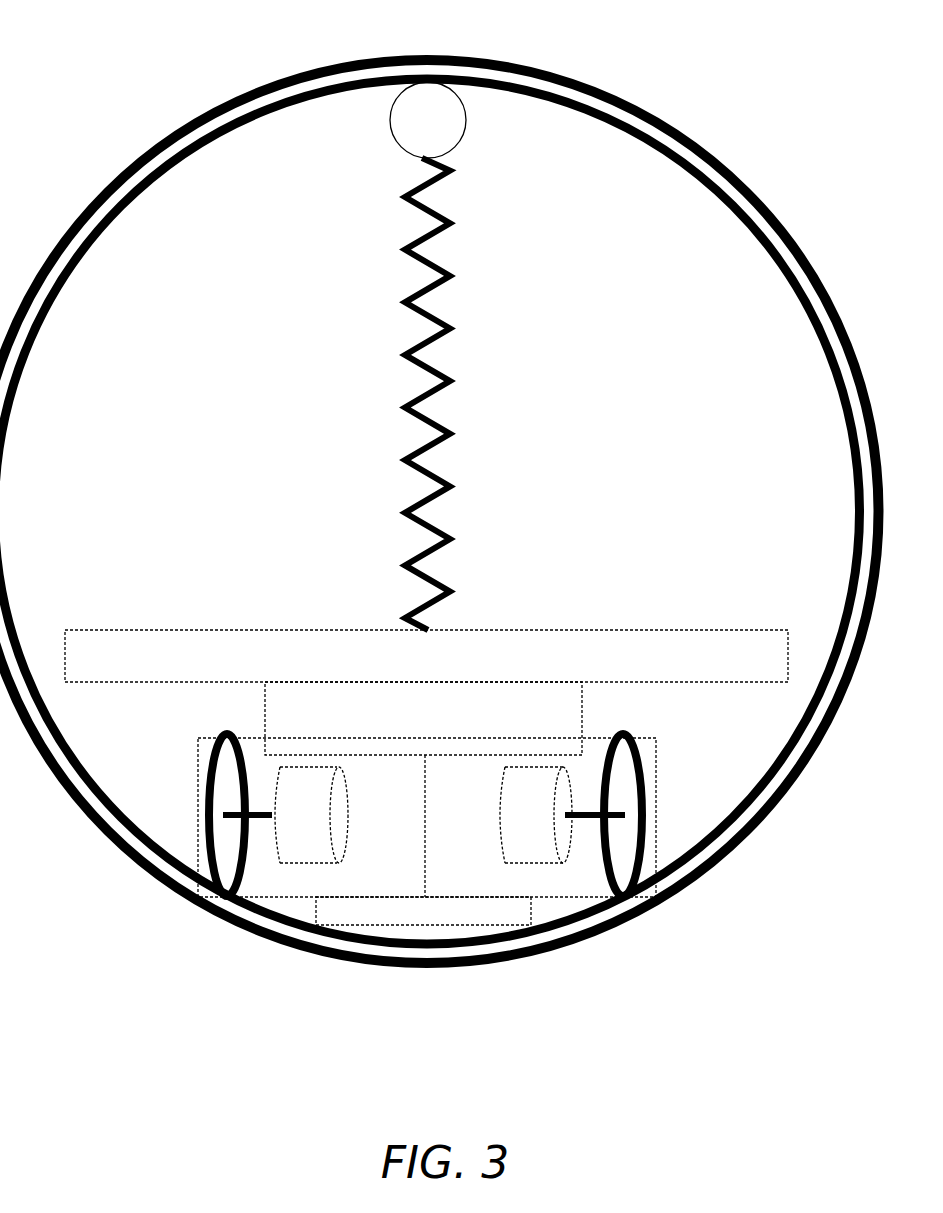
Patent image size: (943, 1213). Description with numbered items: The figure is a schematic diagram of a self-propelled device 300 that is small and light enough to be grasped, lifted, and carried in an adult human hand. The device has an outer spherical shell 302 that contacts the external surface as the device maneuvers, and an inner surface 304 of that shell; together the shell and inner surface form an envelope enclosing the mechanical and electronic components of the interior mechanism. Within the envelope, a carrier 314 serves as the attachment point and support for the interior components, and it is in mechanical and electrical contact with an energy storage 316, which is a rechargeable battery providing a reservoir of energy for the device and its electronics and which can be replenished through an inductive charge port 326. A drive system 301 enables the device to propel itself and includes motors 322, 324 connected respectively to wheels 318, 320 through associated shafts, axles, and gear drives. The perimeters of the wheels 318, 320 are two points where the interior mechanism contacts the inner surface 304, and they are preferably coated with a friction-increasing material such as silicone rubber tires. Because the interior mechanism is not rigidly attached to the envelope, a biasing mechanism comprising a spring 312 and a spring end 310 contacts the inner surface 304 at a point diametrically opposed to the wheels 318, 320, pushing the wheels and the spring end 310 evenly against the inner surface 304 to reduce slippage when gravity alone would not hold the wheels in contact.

The self-propelled device 300 is at (106, 78).
The drive system 301 is at (198, 860).
The outer spherical shell 302 is at (760, 180).
The inner surface 304 is at (745, 233).
The spring end 310 is at (428, 120).
The spring 312 is at (405, 310).
The carrier 314 is at (426, 656).
The energy storage 316 is at (423, 718).
The wheel 318 is at (227, 797).
The wheel 320 is at (647, 816).
The motor 322 is at (311, 815).
The motor 324 is at (536, 815).
The inductive charge port 326 is at (453, 933).